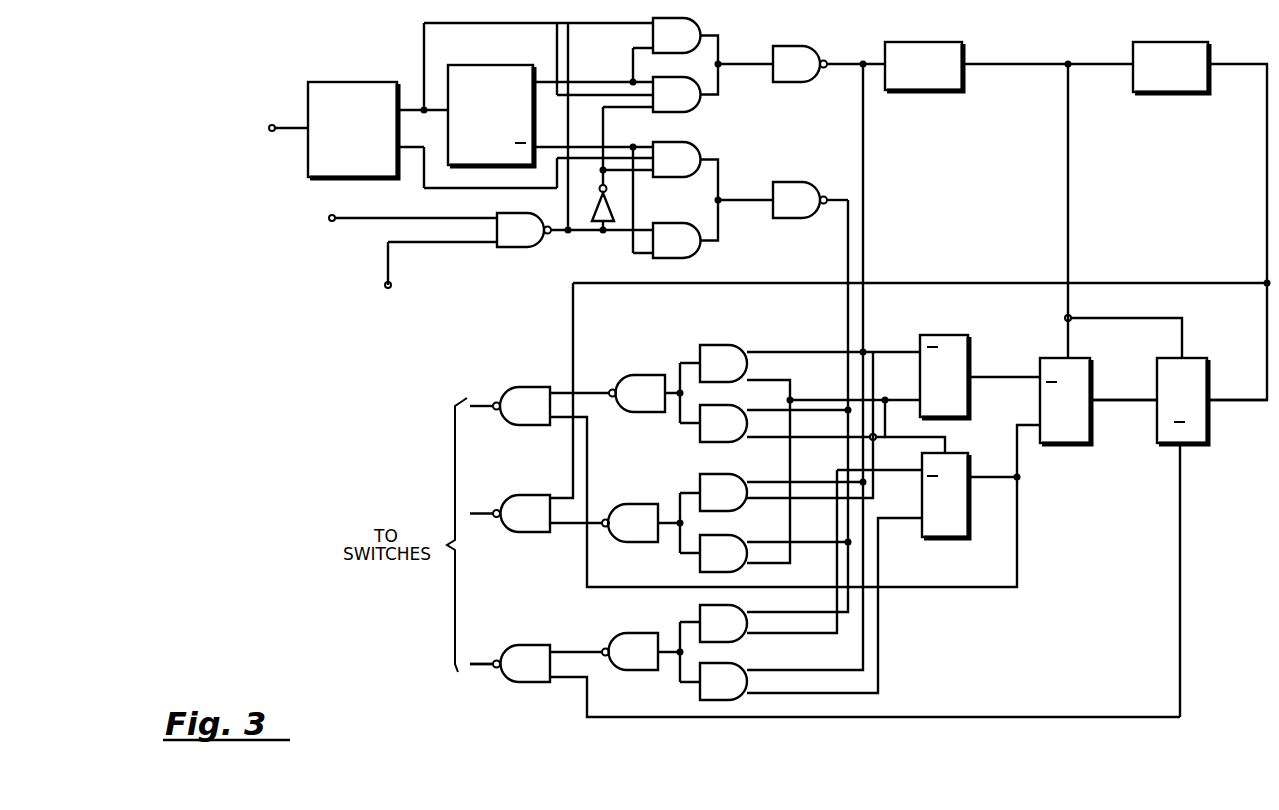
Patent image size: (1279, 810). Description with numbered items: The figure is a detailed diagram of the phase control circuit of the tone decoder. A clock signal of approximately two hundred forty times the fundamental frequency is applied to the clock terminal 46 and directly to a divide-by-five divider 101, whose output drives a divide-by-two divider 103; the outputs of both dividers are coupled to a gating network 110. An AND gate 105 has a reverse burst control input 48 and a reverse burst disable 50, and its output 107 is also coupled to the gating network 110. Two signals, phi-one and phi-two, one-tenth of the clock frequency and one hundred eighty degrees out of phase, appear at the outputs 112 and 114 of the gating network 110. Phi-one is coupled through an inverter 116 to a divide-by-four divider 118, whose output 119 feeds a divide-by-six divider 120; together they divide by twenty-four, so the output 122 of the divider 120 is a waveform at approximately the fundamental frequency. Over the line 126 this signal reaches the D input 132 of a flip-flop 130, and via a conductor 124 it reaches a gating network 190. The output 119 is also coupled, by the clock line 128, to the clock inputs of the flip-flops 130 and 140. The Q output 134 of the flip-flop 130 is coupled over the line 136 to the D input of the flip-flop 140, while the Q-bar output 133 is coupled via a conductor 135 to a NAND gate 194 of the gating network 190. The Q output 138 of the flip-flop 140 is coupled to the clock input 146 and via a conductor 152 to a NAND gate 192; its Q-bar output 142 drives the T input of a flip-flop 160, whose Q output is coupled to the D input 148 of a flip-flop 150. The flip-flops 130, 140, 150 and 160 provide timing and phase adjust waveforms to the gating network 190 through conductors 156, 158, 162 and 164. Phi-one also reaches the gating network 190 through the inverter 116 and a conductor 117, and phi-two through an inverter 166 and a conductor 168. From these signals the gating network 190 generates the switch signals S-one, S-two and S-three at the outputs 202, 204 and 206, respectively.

The clock terminal 46 is at (286, 128).
The reverse burst control input 48 is at (377, 219).
The reverse burst disable 50 is at (388, 268).
The divide-by-five divider 101 is at (333, 84).
The divide-by-two divider 103 is at (474, 66).
The AND gate 105 is at (513, 247).
The output of the AND gate 107 is at (570, 233).
The gating network 110 is at (737, 137).
The output of the gating network 112 is at (720, 67).
The output of the gating network 114 is at (720, 203).
The inverter 116 is at (790, 47).
The conductor 117 is at (863, 180).
The divide-by-four divider 118 is at (930, 42).
The output of the divider 119 is at (988, 64).
The divide-by-six divider 120 is at (1160, 42).
The output of the divider 122 is at (1218, 64).
The conductor 124 is at (792, 283).
The line to D input of flip-flop 130 126 is at (1263, 309).
The clock line 128 is at (1068, 209).
The flip-flop 130 is at (1197, 358).
The D input 132 is at (1232, 401).
The Q-bar output 133 is at (1182, 447).
The Q output 134 is at (1151, 403).
The conductor 135 is at (933, 717).
The D output line of flip-flop 140 136 is at (1095, 400).
The Q output 138 is at (1038, 423).
The flip-flop 140 is at (1080, 358).
The Q-bar output 142 is at (1038, 377).
The clock input 146 is at (993, 479).
The D input 148 is at (950, 453).
The flip-flop 150 is at (945, 538).
The conductor 152 is at (925, 589).
The conductor 156 is at (897, 473).
The conductor 158 is at (895, 521).
The flip-flop 160 is at (948, 335).
The conductor 162 is at (904, 351).
The conductor 164 is at (904, 398).
The inverter 166 is at (790, 182).
The conductor 168 is at (848, 250).
The gating network 190 is at (590, 624).
The NAND gate 192 is at (528, 387).
The NAND gate 194 is at (527, 683).
The output 202 is at (478, 511).
The output 204 is at (478, 663).
The output 206 is at (476, 405).